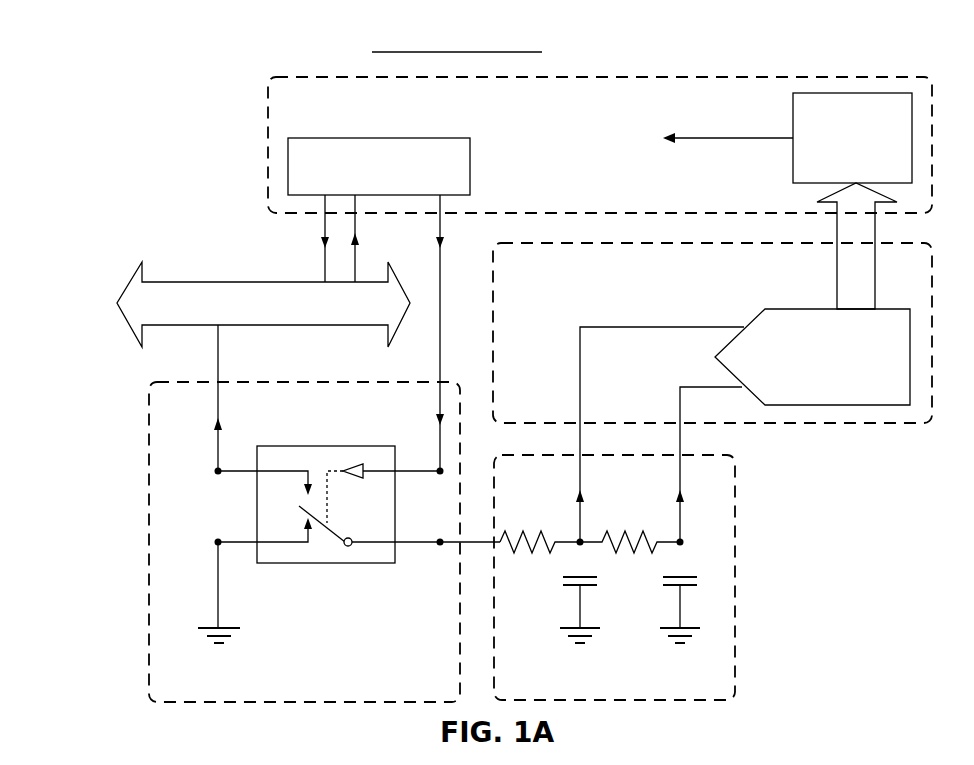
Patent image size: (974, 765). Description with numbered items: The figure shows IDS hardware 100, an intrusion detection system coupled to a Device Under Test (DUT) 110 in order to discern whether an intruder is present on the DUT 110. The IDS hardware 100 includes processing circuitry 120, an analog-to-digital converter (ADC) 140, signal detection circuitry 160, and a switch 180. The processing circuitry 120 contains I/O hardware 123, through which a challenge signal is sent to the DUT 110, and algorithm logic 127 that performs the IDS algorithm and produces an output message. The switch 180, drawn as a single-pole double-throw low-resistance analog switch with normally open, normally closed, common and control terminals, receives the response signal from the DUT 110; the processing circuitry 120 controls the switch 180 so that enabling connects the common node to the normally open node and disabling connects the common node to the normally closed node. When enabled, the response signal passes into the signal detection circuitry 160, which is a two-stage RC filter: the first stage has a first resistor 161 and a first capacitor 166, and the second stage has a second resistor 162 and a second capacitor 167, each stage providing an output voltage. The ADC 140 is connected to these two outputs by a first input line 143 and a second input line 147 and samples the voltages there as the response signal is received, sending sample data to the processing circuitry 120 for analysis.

The IDS hardware 100 is at (172, 148).
The device under test (DUT) 110 is at (236, 282).
The processing circuitry 120 is at (306, 106).
The I/O hardware 123 is at (471, 178).
The algorithm logic 127 is at (793, 110).
The analog-to-digital converter (ADC) 140 is at (818, 391).
The first ADC input line 143 is at (714, 327).
The second ADC input line 147 is at (706, 387).
The signal detection circuitry 160 is at (532, 685).
The first resistor R1 161 is at (550, 554).
The second resistor R2 162 is at (620, 533).
The first capacitor C1 166 is at (574, 592).
The second capacitor C2 167 is at (668, 590).
The switch 180 is at (189, 686).